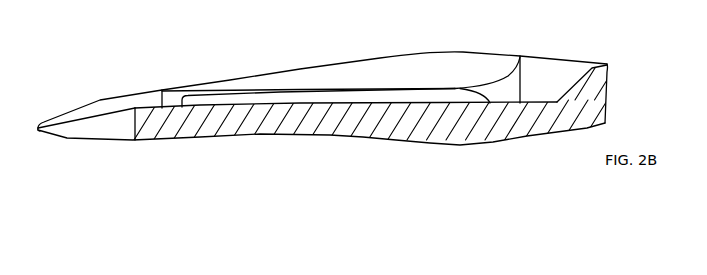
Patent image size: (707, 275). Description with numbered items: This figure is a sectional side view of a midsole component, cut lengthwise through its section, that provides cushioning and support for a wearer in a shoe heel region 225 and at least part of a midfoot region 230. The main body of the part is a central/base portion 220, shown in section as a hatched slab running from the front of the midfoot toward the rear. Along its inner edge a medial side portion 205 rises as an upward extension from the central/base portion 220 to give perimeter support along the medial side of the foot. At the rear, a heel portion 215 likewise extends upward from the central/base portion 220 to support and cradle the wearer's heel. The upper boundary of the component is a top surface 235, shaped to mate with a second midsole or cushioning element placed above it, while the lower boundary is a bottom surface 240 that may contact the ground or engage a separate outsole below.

The medial side portion 205 is at (261, 75).
The top surface 235 is at (408, 92).
The heel portion 215 is at (614, 60).
The central/base portion 220 is at (319, 129).
The bottom surface 240 is at (450, 152).
The midfoot region 230 is at (135, 175).
The shoe heel region 225 is at (540, 168).